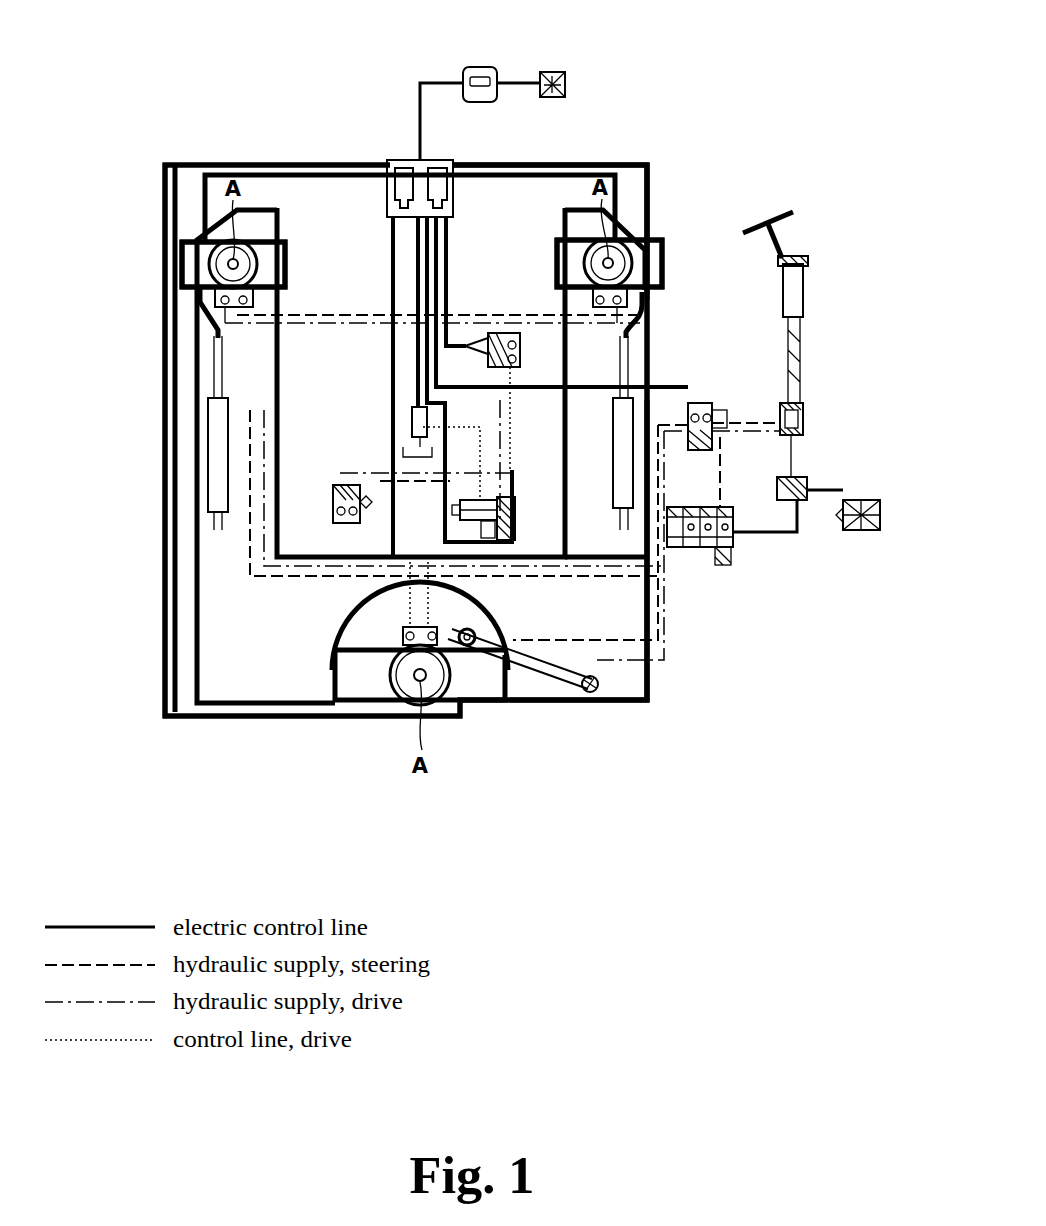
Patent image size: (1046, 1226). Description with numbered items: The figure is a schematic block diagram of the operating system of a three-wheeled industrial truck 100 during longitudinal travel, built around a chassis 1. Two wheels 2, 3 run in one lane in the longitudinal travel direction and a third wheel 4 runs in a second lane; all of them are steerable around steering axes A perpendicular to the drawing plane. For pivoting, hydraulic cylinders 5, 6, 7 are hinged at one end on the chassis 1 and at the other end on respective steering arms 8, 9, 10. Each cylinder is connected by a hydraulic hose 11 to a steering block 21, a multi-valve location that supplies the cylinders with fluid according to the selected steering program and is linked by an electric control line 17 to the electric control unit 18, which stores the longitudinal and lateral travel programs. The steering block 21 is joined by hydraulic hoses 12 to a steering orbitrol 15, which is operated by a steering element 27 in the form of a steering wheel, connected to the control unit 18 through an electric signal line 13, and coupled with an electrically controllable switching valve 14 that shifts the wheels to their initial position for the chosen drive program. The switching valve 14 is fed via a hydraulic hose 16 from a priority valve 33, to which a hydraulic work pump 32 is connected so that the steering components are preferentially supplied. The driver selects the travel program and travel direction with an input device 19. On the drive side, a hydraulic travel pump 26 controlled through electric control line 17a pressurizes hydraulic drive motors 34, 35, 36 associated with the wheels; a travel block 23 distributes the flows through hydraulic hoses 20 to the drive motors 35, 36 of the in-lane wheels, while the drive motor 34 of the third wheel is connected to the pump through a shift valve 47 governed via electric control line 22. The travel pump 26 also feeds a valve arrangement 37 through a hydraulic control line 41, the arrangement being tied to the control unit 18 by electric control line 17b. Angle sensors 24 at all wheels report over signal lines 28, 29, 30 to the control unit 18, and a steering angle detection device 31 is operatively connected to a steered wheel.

The industrial truck 100 is at (712, 72).
The chassis 1 is at (636, 682).
The wheel 2 is at (183, 272).
The wheel 3 is at (653, 270).
The third wheel 4 is at (488, 683).
The hydraulic cylinder 5 is at (215, 445).
The hydraulic cylinder 6 is at (613, 455).
The hydraulic cylinder 7 is at (554, 672).
The steering arm 8 is at (210, 322).
The steering arm 9 is at (637, 320).
The steering arm 10 is at (456, 634).
The hydraulic hose 11 is at (262, 412).
The hydraulic hoses 12 is at (747, 421).
The electric signal line 13 is at (608, 560).
The switching valve 14 is at (693, 548).
The steering orbitrol 15 is at (805, 415).
The hydraulic hose 16 is at (803, 525).
The electric control line 17 is at (587, 383).
The electric control line 17a is at (443, 517).
The electric control line 17b is at (395, 384).
The electric control unit 18 is at (440, 160).
The input device 19 is at (552, 72).
The hydraulic hoses 20 is at (361, 313).
The steering block 21 is at (705, 399).
The electric control line 22 is at (391, 360).
The travel block 23 is at (496, 333).
The angle sensors 24 is at (182, 255).
The hydraulic travel pump 26 is at (518, 512).
The steering element 27 is at (770, 222).
The signal line 28 is at (378, 722).
The signal line 29 is at (309, 187).
The signal line 30 is at (650, 176).
The steering angle detection device 31 is at (183, 227).
The hydraulic work pump 32 is at (860, 532).
The priority valve 33 is at (801, 483).
The hydraulic drive motor 34 is at (403, 630).
The hydraulic drive motor 35 is at (252, 298).
The hydraulic drive motor 36 is at (593, 291).
The valve arrangement 37 is at (408, 428).
The hydraulic control line 41 is at (469, 350).
The shift valve 47 is at (333, 502).